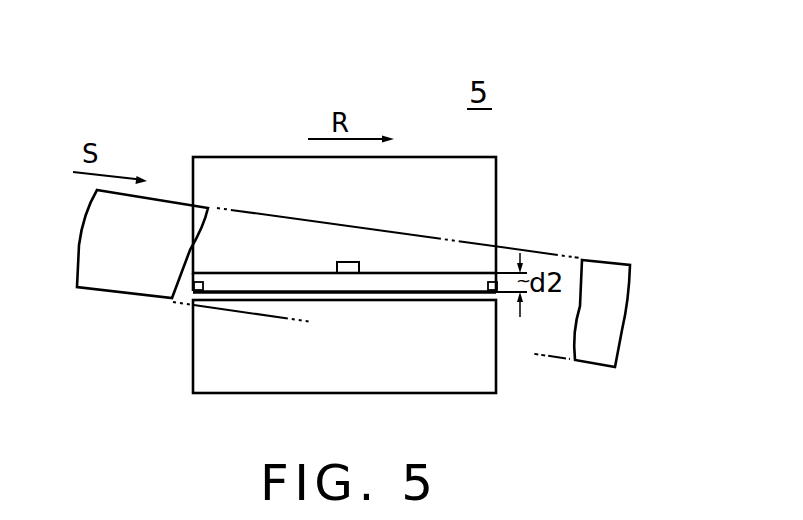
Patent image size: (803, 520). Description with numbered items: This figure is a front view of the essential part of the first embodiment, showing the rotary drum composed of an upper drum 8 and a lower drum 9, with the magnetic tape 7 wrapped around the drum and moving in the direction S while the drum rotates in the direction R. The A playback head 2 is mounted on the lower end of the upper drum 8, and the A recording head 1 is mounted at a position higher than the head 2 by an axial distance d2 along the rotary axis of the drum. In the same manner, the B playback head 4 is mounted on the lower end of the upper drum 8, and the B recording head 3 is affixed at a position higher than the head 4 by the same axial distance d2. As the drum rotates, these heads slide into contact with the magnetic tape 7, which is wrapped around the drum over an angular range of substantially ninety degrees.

The A channel recording head 1 is at (343, 262).
The A channel playback head 2 is at (488, 279).
The B channel recording head 3 is at (313, 253).
The B channel playback head 4 is at (200, 281).
The magnetic tape 7 is at (107, 277).
The upper drum 8 is at (475, 208).
The lower drum 9 is at (213, 369).